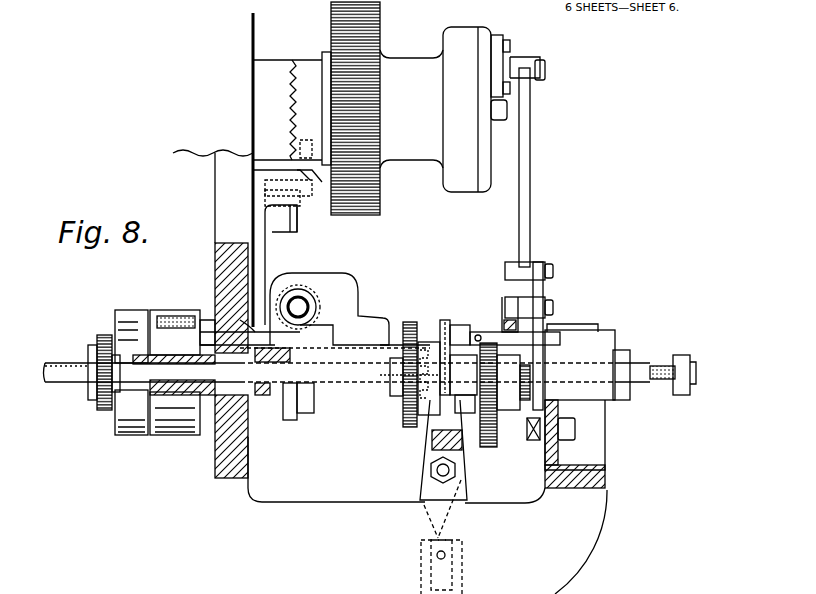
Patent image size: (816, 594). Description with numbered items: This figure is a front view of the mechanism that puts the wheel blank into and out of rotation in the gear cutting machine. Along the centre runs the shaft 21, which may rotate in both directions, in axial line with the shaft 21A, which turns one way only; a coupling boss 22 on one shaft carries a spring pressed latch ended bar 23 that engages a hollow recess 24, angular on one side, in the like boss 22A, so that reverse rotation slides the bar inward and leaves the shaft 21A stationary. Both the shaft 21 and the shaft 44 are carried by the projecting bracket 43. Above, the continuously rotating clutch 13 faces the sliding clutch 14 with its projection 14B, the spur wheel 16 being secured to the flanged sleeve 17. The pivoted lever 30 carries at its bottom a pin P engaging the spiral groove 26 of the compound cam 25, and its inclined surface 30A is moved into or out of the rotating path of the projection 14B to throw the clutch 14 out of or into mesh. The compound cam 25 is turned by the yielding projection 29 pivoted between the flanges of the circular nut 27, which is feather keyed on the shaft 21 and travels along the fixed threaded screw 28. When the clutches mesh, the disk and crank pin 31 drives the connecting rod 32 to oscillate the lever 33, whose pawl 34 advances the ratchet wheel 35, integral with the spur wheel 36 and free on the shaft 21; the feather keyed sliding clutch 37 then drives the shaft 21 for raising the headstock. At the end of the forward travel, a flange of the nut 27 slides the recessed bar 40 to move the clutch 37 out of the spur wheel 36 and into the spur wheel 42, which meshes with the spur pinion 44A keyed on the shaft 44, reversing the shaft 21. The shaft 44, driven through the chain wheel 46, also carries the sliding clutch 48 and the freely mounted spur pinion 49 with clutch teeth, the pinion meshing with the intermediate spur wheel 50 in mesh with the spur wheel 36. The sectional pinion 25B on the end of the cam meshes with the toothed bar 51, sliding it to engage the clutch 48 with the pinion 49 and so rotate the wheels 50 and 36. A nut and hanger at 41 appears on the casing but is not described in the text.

The clutch 13 is at (280, 69).
The sliding clutch 14 is at (311, 69).
The projection of clutch 14B is at (300, 150).
The spur wheel 16 is at (380, 32).
The flanged sleeve 17 is at (481, 28).
The shaft 21 is at (662, 366).
The shaft 21A is at (62, 362).
The coupling boss 22 is at (178, 437).
The coupling boss 22A is at (132, 437).
The latch ended bar 23 is at (120, 322).
The hollow recess 24 is at (143, 318).
The compound cam 25 is at (335, 312).
The sectional pinion 25B is at (318, 300).
The spiral groove 26 is at (240, 325).
The circular nut 27 is at (289, 422).
The threaded screw 28 is at (268, 398).
The projection 29 is at (308, 414).
The pivoted lever 30 is at (266, 258).
The inclined surface 30A is at (318, 204).
The disk and crank pin 31 is at (546, 70).
The connecting rod 32 is at (530, 167).
The lever 33 is at (546, 291).
The pawl 34 is at (506, 316).
The ratchet wheel 35 is at (485, 332).
The spur wheel 36 is at (432, 342).
The sliding clutch 37 is at (412, 330).
The recessed bar 40 is at (360, 370).
The hanger 41 is at (435, 440).
The spur wheel 42 is at (452, 405).
The projecting bracket 43 is at (514, 537).
The shaft 44 is at (70, 385).
The spur pinion 44A is at (390, 395).
The wheel 46 is at (100, 410).
The sliding clutch 48 is at (478, 400).
The spur pinion 49 is at (587, 409).
The intermediate spur wheel 50 is at (505, 412).
The bar 51 is at (596, 318).
The pin P is at (248, 322).